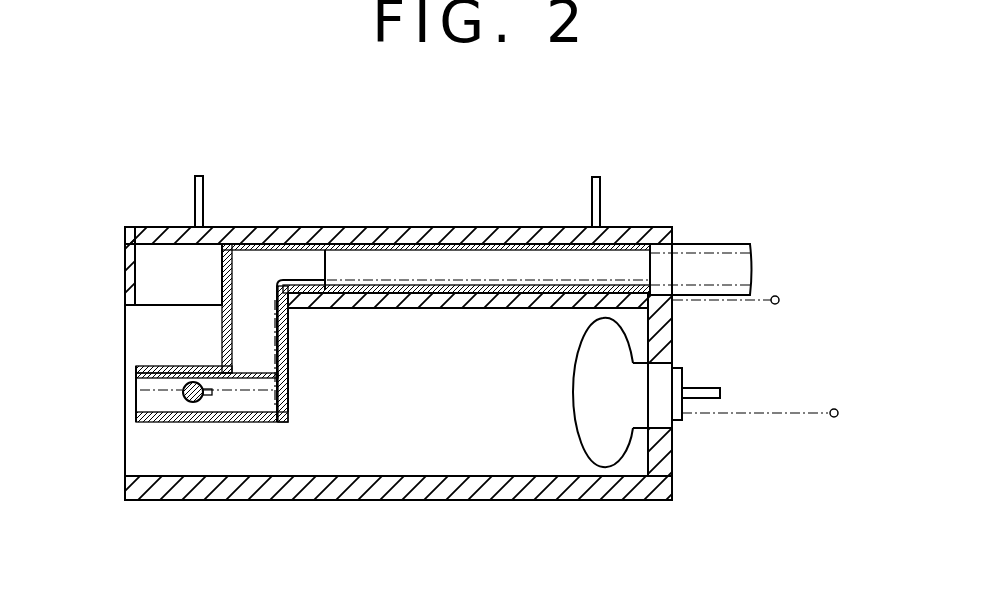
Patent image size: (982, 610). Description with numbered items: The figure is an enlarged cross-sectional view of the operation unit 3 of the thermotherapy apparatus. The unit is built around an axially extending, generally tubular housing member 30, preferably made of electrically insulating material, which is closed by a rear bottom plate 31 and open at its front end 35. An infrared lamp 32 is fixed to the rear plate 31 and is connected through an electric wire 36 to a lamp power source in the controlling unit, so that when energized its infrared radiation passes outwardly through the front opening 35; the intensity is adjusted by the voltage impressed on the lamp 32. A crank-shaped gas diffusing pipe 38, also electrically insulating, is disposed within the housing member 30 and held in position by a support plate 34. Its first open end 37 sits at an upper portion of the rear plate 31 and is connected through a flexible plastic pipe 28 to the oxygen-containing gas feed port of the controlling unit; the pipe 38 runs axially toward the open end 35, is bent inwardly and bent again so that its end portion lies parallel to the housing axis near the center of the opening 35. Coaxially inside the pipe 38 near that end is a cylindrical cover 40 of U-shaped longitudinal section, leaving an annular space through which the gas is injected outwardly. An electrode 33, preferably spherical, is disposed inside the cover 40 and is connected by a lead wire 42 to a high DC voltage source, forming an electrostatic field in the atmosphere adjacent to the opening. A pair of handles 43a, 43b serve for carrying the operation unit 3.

The operation unit 3 is at (636, 226).
The pipe 28 is at (735, 243).
The housing member 30 is at (413, 490).
The rear bottom plate 31 is at (675, 450).
The infrared lamp 32 is at (607, 445).
The electrode 33 is at (155, 390).
The support plate 34 is at (525, 308).
The front end 35 is at (123, 447).
The electric wire 36 is at (762, 413).
The first open end 37 is at (653, 267).
The gas diffusing pipe 38 is at (415, 240).
The cylindrical cover 40 is at (150, 365).
The lead wire 42 is at (774, 297).
The handle 43a is at (206, 188).
The handle 43b is at (592, 190).